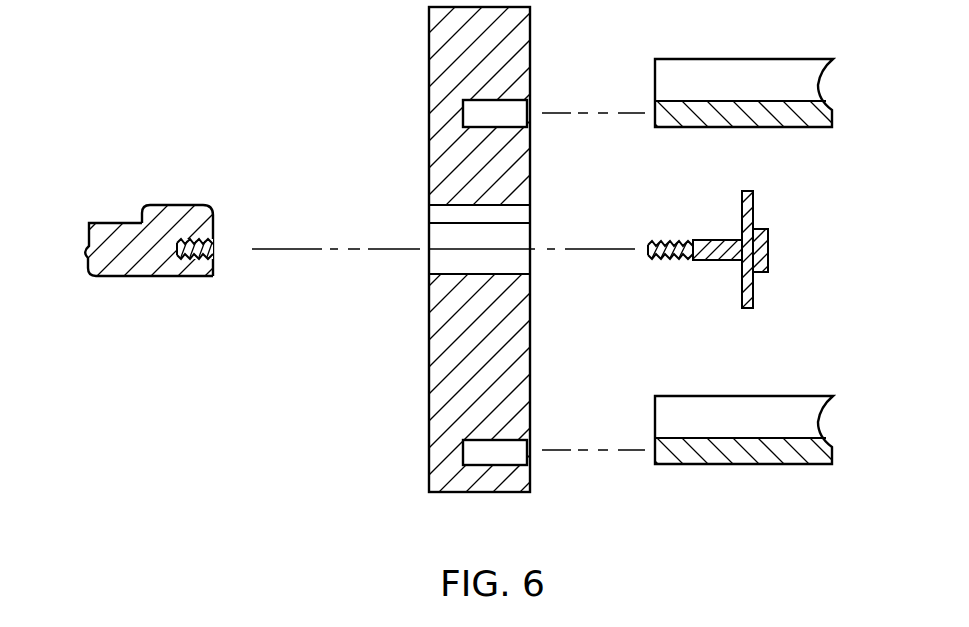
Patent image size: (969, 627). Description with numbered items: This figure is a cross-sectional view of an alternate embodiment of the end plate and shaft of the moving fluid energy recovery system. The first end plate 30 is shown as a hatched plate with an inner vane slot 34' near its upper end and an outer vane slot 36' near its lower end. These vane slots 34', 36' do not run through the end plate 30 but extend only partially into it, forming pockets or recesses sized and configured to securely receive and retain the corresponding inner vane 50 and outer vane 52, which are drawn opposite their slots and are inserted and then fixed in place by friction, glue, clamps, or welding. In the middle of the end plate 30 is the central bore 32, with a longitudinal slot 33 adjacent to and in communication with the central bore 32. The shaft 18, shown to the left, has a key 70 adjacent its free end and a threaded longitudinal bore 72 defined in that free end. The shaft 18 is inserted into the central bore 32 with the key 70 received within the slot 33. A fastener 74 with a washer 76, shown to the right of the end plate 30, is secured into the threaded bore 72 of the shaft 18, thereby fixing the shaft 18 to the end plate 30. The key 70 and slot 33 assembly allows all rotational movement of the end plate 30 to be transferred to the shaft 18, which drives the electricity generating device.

The shaft 18 is at (143, 277).
The first end plate 30 is at (430, 50).
The central bore 32 is at (440, 266).
The longitudinal slot 33 is at (445, 213).
The inner vane slot 34' is at (554, 83).
The outer vane slot 36' is at (554, 420).
The inner vane 50 is at (791, 58).
The outer vane 52 is at (745, 396).
The key 70 is at (177, 205).
The threaded longitudinal bore 72 is at (216, 250).
The fastener 74 is at (768, 246).
The washer 76 is at (752, 200).